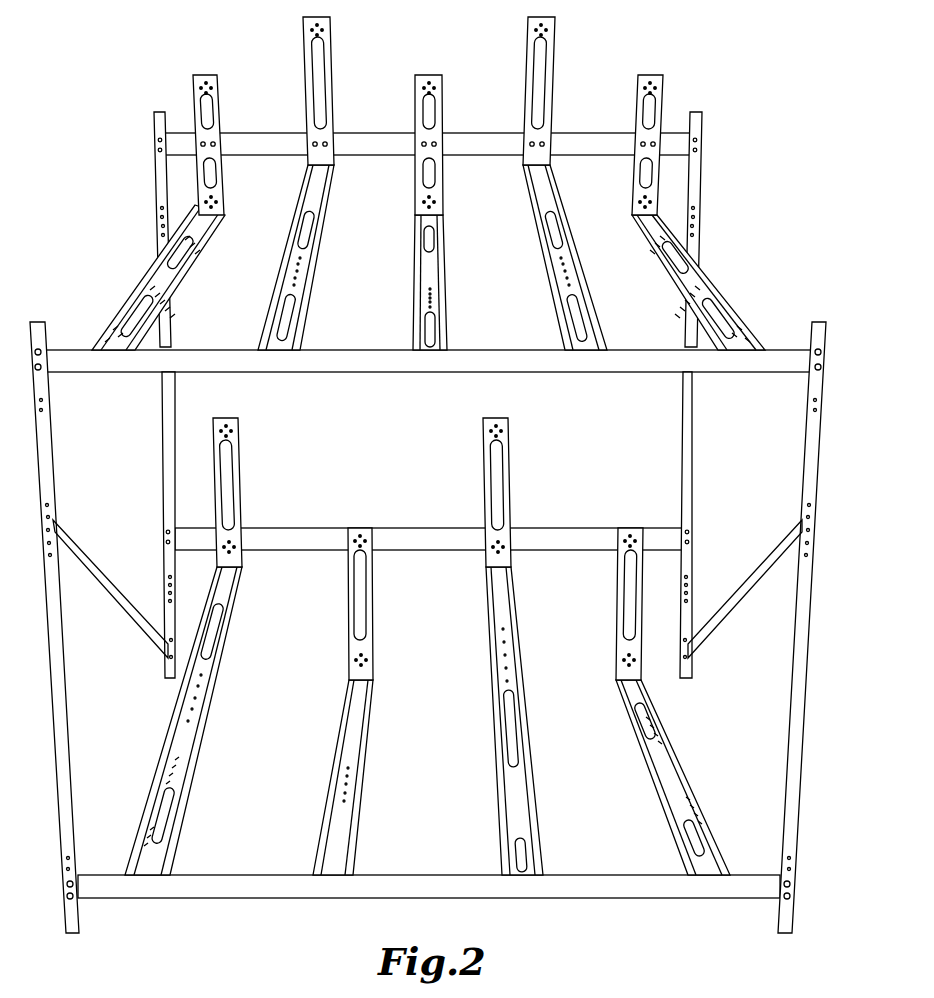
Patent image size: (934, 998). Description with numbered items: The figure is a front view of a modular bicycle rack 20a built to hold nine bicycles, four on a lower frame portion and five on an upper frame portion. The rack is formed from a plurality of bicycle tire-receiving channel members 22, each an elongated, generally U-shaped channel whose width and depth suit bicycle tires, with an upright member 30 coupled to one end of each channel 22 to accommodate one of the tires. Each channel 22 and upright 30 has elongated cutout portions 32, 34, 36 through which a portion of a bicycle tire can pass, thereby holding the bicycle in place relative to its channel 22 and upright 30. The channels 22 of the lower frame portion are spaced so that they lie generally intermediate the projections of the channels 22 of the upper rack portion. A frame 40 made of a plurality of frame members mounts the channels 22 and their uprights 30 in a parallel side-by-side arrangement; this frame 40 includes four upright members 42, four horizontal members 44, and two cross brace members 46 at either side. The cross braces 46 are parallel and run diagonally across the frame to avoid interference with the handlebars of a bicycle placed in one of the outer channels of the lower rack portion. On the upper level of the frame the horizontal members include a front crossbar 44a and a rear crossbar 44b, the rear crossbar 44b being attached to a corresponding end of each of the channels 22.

The modular bicycle rack 20a is at (429, 504).
The bicycle tire-receiving channel member 22 is at (427, 520).
The upright member 30 is at (428, 348).
The elongated cutout portion 32 is at (428, 110).
The elongated cutout portion 34 is at (432, 240).
The elongated cutout portion 36 is at (433, 328).
The frame 40 is at (429, 522).
The upright member 42 is at (700, 196).
The horizontal member 44 is at (429, 513).
The front crossbar 44a is at (323, 363).
The rear crossbar 44b is at (275, 146).
The cross brace member 46 is at (115, 292).